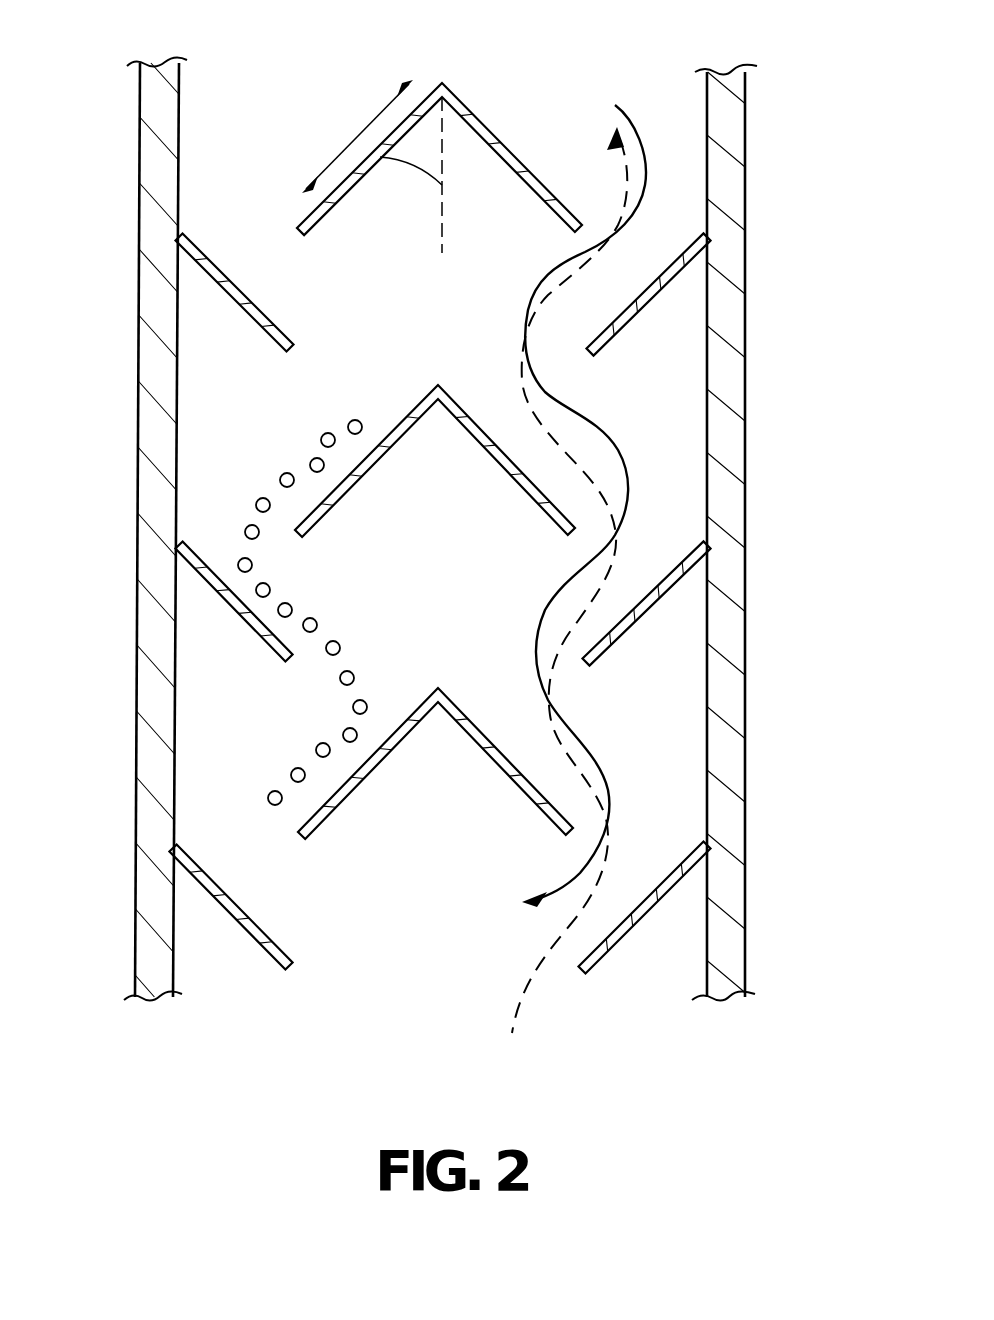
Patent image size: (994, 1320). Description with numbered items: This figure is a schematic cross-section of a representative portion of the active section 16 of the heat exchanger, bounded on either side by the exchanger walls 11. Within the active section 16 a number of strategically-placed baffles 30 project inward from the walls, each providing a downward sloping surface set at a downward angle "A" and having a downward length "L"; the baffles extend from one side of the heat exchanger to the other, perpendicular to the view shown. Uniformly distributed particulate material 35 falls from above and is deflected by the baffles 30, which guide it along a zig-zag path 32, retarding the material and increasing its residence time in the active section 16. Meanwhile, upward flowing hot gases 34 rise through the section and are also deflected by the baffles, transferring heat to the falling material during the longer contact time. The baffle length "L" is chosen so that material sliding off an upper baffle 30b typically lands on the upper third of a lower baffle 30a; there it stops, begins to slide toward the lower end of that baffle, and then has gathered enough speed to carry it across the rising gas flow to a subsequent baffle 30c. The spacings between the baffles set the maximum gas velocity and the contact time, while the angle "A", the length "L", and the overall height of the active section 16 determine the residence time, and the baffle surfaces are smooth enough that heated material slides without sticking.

The conduit wall 11 is at (737, 183).
The active section 16 is at (506, 549).
The baffles 30 is at (492, 132).
The lower baffle 30a is at (232, 605).
The upper baffle 30b is at (410, 440).
The subsequent baffle 30c is at (392, 731).
The zig-zag path 32 is at (547, 272).
The upward flowing hot gases 34 is at (522, 380).
The particulate material 35 is at (312, 593).